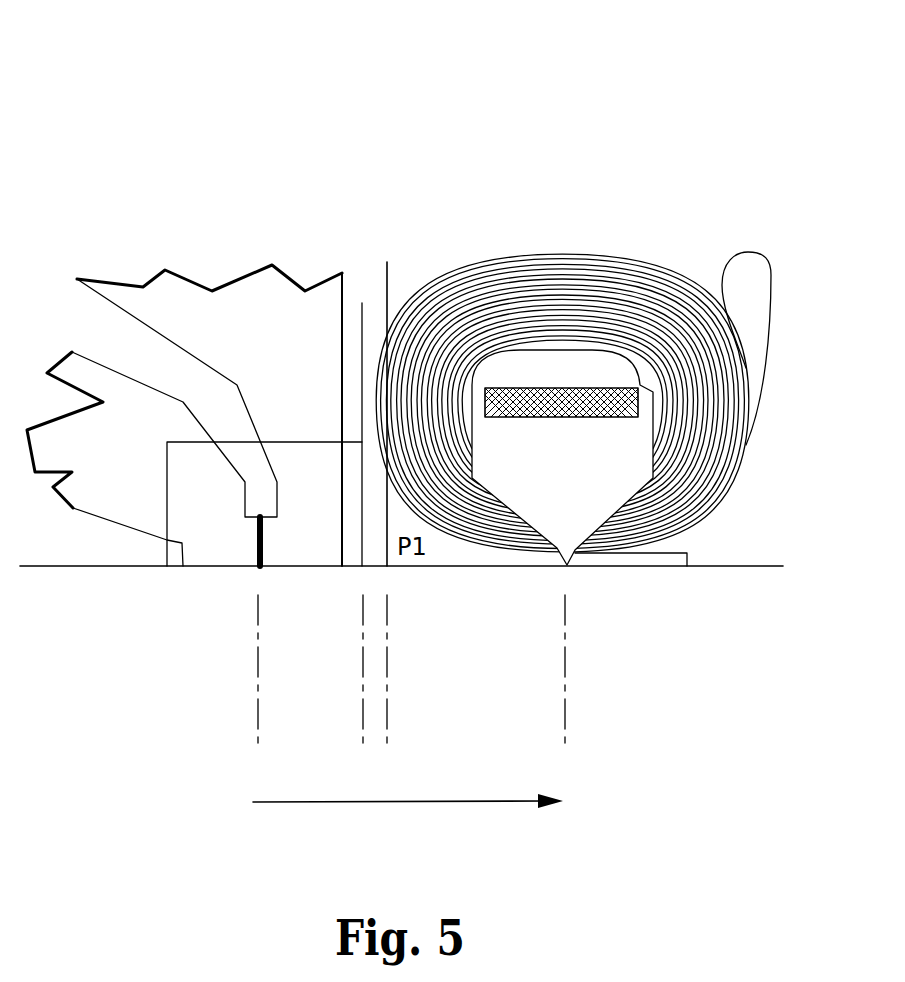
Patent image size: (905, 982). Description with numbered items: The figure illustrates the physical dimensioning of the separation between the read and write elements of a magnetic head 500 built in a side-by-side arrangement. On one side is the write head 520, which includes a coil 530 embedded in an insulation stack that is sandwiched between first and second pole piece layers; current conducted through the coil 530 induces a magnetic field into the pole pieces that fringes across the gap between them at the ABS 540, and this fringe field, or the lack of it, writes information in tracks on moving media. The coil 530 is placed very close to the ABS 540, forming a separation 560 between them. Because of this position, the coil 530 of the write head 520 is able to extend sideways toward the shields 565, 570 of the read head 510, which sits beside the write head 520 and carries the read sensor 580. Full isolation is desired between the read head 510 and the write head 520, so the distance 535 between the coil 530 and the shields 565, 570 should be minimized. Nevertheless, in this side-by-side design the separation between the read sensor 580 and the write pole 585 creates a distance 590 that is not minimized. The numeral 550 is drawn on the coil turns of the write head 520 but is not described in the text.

The magnetic head 500 is at (562, 83).
The read head 510 is at (138, 276).
The write head 520 is at (590, 370).
The coil 530 is at (623, 257).
The distance 535 is at (375, 733).
The ABS 540 is at (770, 565).
The coil turns 550 is at (733, 470).
The separation 560 is at (687, 557).
The shield 565 is at (280, 442).
The shield 570 is at (350, 308).
The read sensor 580 is at (255, 548).
The write pole 585 is at (570, 567).
The distance 590 is at (340, 803).